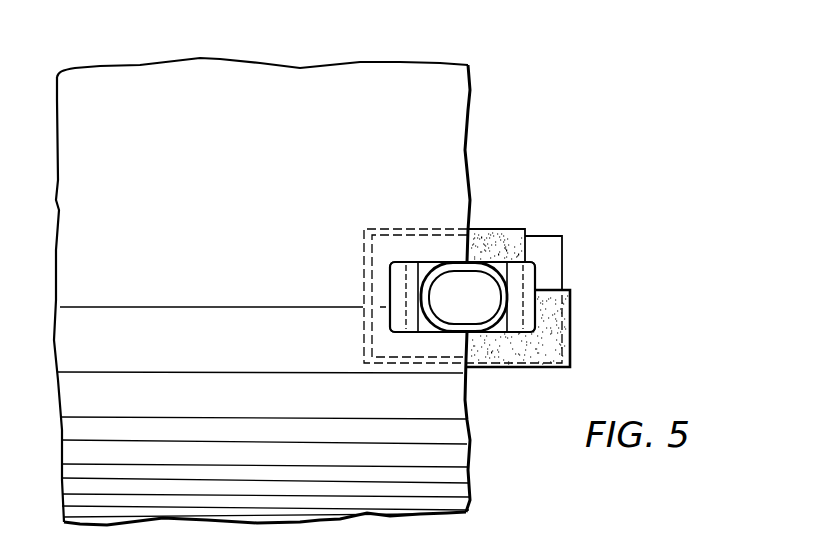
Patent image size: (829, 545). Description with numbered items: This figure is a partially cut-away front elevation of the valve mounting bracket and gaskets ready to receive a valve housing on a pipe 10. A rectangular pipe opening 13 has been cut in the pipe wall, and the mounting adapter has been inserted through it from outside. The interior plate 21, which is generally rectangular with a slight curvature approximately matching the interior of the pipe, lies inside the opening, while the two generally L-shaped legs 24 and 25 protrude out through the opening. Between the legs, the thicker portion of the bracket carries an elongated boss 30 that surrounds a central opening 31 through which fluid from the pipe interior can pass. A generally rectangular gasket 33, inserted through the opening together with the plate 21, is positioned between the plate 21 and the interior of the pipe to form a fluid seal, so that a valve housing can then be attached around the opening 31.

The panel 10 is at (470, 117).
The rectangular pipe opening 13 is at (428, 327).
The interior plate 21 is at (562, 251).
The leg 24 is at (537, 281).
The leg 25 is at (390, 283).
The elongated boss 30 is at (433, 271).
The central opening 31 is at (450, 275).
The gasket 33 is at (499, 229).